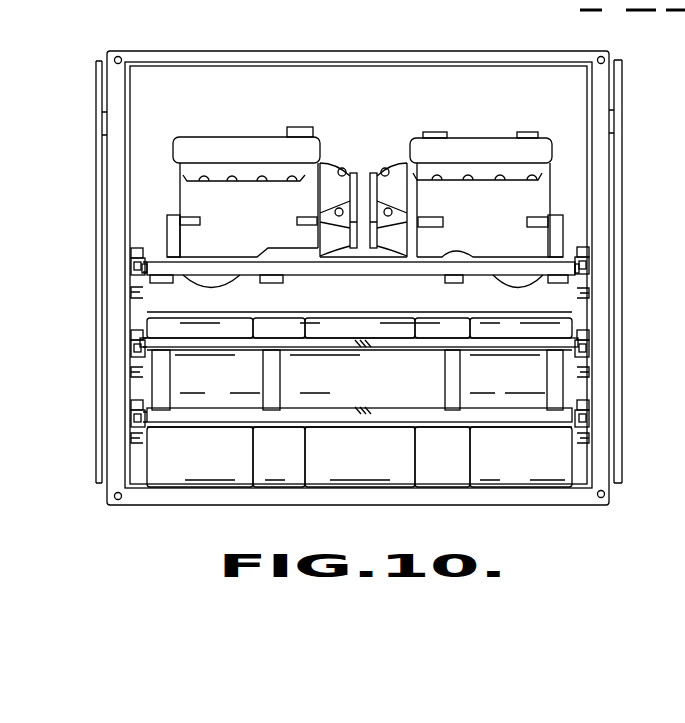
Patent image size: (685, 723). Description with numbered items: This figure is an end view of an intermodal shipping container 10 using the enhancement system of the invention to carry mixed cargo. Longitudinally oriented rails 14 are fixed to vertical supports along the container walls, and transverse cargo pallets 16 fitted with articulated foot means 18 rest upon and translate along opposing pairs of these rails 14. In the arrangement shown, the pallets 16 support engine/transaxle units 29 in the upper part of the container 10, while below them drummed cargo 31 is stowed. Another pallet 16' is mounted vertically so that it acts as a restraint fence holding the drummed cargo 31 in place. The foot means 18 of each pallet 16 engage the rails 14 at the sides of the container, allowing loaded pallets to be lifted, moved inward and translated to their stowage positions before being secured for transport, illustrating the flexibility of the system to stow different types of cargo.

The intermodal shipping container 10 is at (475, 50).
The longitudinal rails 14 is at (132, 251).
The cargo pallet 16 is at (360, 249).
The pallet mounted vertically 16' is at (412, 369).
The articulated foot means 18 is at (131, 268).
The engine/transaxle units 29 is at (320, 163).
The drummed cargo 31 is at (457, 470).